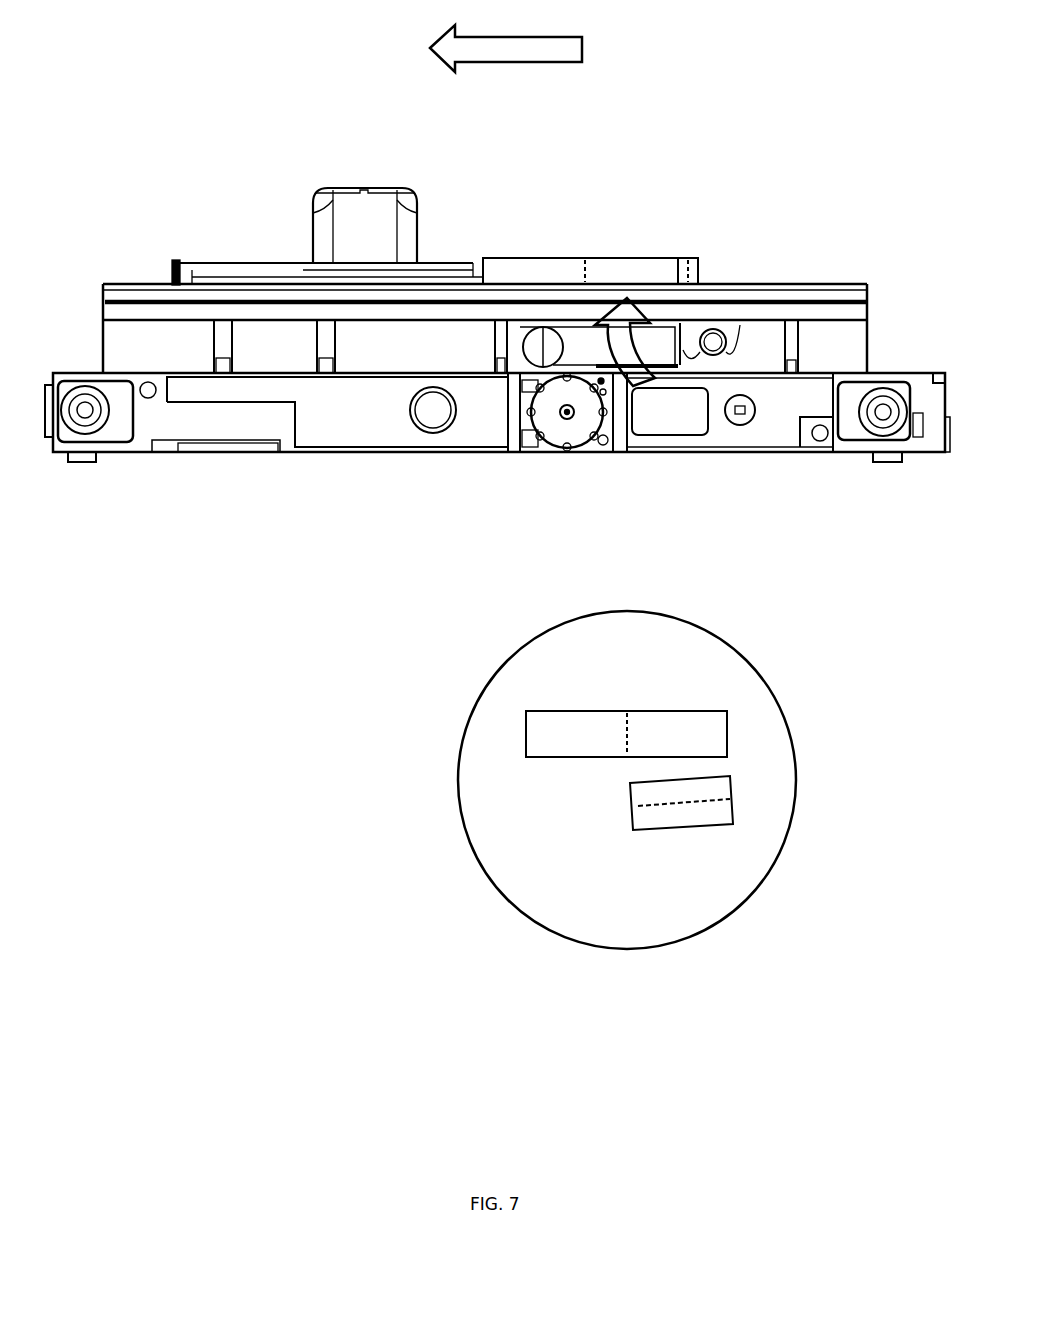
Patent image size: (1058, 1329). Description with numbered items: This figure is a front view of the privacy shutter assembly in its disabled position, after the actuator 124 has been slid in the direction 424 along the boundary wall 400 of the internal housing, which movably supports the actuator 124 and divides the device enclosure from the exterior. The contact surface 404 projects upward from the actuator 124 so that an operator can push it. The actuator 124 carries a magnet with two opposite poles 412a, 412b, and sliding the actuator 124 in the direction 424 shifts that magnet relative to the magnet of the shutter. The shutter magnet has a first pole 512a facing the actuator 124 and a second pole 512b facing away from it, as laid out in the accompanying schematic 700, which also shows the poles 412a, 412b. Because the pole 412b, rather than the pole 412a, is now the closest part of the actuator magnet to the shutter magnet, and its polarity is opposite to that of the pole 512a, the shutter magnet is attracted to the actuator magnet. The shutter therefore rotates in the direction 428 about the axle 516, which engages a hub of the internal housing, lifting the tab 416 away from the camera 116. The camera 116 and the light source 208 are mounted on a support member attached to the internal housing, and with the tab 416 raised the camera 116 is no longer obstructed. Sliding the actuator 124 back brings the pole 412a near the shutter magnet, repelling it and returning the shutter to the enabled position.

The direction 424 is at (506, 42).
The contact surface 404 is at (342, 192).
The actuator 124 is at (437, 244).
The pole 412a is at (520, 258).
The pole 412b is at (630, 258).
The boundary wall 400 is at (858, 310).
The tab 416 is at (535, 353).
The light source 208 is at (432, 417).
The camera 116 is at (553, 430).
The direction 428 is at (646, 390).
The axle 516 is at (713, 355).
The schematic 700 is at (458, 763).
The first pole 512a is at (636, 790).
The second pole 512b is at (675, 827).